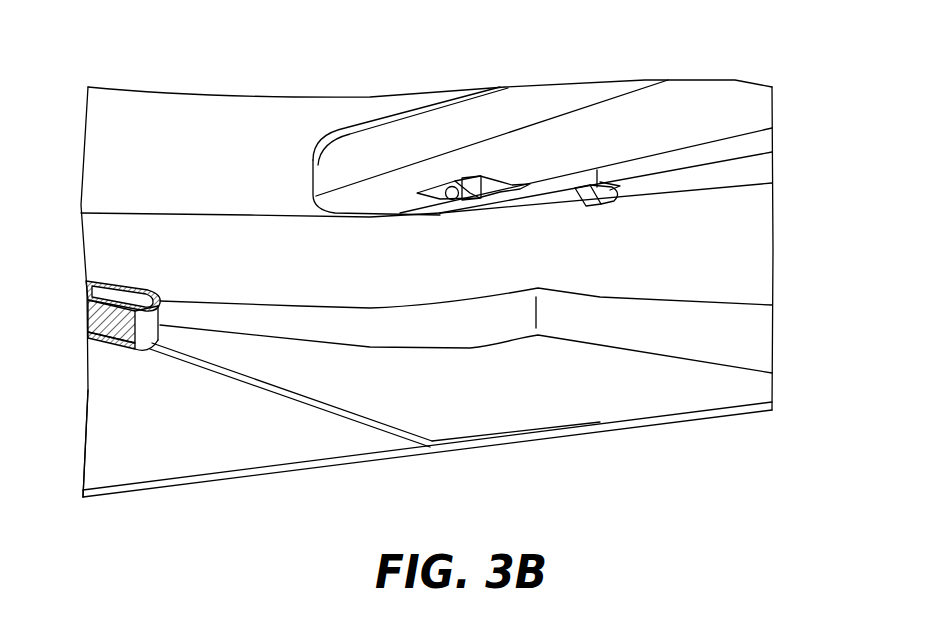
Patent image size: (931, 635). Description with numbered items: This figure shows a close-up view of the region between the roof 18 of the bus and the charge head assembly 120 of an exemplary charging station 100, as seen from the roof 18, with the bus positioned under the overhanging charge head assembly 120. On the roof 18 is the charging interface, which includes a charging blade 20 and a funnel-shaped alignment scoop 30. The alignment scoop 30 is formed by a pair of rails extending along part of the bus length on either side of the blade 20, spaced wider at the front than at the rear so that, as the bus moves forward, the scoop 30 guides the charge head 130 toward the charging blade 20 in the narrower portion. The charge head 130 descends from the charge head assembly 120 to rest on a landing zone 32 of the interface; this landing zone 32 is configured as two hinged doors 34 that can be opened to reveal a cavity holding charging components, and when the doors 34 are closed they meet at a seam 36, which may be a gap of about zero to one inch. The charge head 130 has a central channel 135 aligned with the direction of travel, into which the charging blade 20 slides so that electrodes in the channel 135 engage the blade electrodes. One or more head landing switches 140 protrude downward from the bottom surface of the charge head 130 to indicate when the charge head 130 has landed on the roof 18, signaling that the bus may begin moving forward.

The charging station 100 is at (782, 229).
The roof 18 is at (618, 382).
The charge head assembly 120 is at (104, 133).
The charge head 130 is at (698, 110).
The central channel 135 is at (767, 141).
The head landing switch 140 is at (484, 205).
The alignment scoop 30 is at (624, 336).
The charging blade 20 is at (86, 285).
The seam 36 is at (323, 408).
The hinged doors 34 is at (165, 420).
The landing zone 32 is at (457, 392).